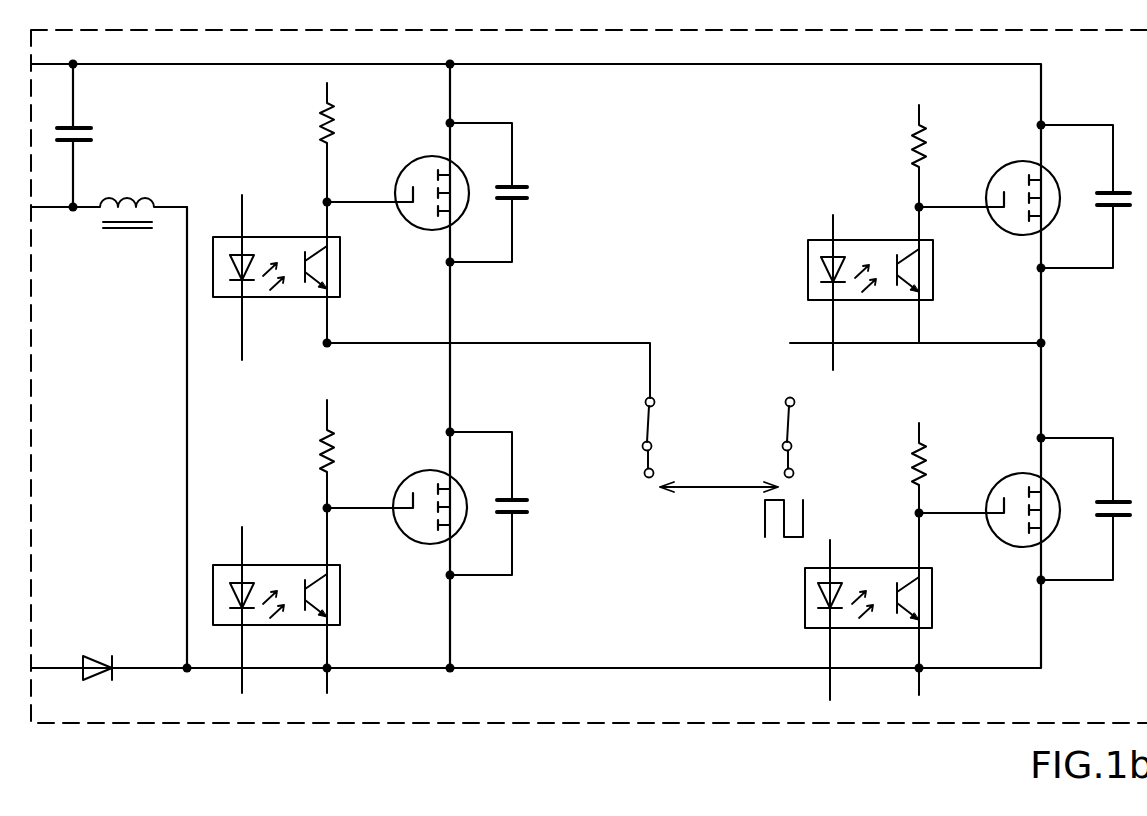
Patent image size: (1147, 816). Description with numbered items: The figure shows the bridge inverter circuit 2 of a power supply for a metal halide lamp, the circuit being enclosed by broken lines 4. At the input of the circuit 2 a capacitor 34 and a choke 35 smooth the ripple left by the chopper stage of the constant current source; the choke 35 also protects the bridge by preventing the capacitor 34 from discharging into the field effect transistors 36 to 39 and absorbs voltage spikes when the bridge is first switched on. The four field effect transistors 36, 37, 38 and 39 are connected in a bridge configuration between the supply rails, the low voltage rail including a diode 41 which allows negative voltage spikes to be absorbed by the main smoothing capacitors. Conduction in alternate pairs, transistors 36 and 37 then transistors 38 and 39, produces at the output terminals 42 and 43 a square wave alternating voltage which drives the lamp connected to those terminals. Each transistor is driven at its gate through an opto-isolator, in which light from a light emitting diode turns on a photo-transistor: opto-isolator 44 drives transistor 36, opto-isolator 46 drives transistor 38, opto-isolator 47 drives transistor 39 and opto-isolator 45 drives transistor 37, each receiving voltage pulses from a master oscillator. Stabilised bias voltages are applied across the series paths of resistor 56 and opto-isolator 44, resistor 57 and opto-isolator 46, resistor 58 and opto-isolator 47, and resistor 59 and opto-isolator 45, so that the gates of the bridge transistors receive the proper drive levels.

The bridge inverter circuit 2 is at (690, 213).
The broken lines 4 is at (1146, 636).
The capacitor 34 is at (86, 130).
The choke 35 is at (140, 201).
The field effect transistor 36 is at (425, 157).
The field effect transistor 37 is at (1010, 474).
The field effect transistor 38 is at (1010, 162).
The field effect transistor 39 is at (421, 471).
The diode 41 is at (97, 665).
The output terminal 42 is at (645, 480).
The output terminal 43 is at (794, 480).
The opto-isolator 44 is at (281, 237).
The opto-isolator 45 is at (878, 568).
The opto-isolator 46 is at (885, 240).
The opto-isolator 47 is at (277, 565).
The resistor 56 is at (321, 120).
The resistor 57 is at (913, 140).
The resistor 58 is at (321, 452).
The resistor 59 is at (912, 456).